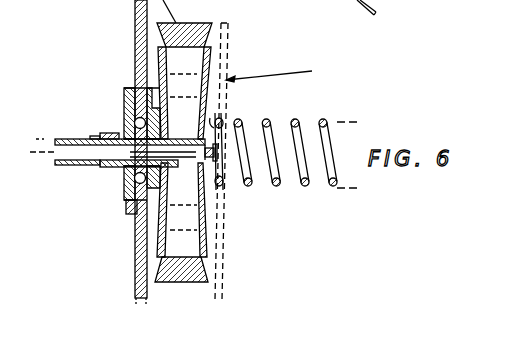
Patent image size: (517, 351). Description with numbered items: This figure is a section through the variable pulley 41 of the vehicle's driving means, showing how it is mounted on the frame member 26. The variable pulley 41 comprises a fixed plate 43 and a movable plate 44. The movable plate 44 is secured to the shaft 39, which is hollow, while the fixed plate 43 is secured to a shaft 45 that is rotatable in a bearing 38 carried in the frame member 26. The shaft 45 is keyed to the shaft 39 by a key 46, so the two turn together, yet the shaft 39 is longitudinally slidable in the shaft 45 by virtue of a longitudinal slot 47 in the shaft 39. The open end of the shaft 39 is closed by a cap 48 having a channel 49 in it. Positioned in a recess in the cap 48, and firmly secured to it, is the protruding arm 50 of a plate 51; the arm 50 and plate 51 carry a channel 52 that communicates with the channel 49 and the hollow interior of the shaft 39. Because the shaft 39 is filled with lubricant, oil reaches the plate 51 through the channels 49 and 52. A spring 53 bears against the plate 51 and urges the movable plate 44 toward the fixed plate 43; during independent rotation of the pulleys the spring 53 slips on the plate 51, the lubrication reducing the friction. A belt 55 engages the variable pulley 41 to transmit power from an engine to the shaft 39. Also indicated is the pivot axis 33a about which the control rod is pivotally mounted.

The frame member 26 is at (137, 25).
The fixed plate 43 is at (163, 52).
The belt 55 is at (160, 78).
The bearing 38 is at (134, 118).
The key 46 is at (115, 137).
The longitudinal slot 47 is at (92, 137).
The shaft 39 is at (67, 167).
The shaft 45 is at (115, 168).
The channel 49 is at (130, 204).
The cap 48 is at (217, 128).
The protruding arm 50 is at (216, 140).
The plate 51 is at (213, 150).
The channel 52 is at (222, 165).
The spring 53 is at (302, 186).
The movable plate 44 is at (228, 40).
The variable pulley 41 is at (281, 72).
The pivot axis 33a is at (324, 0).